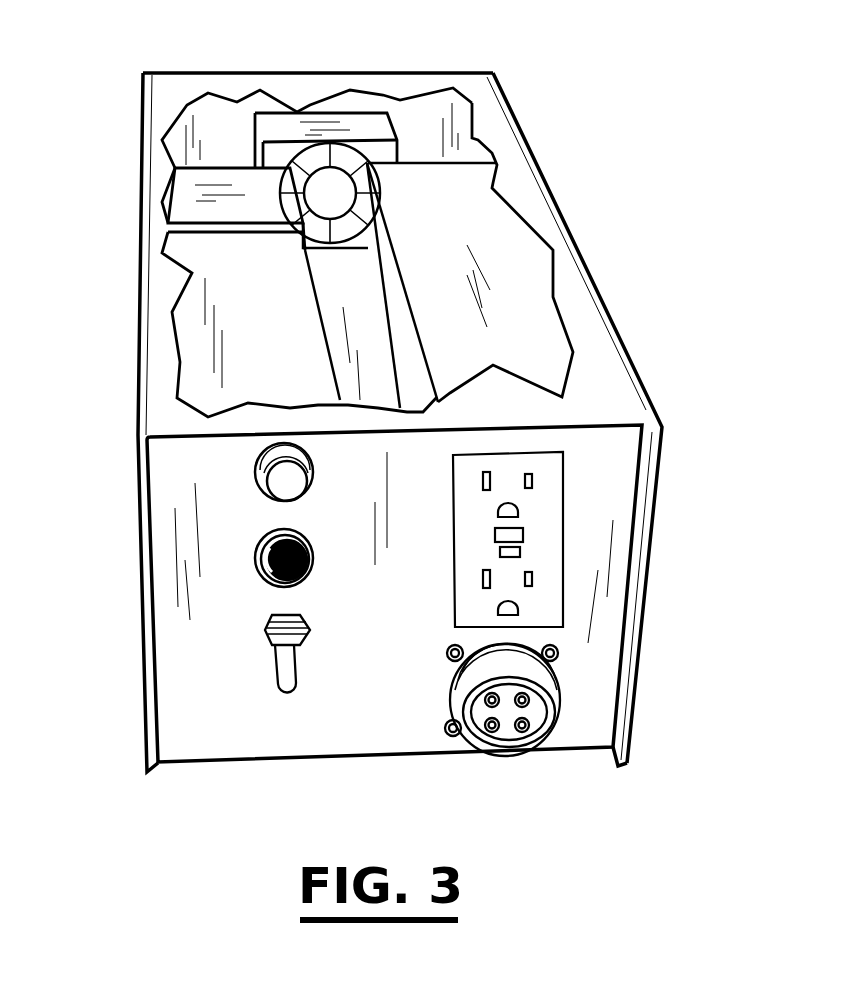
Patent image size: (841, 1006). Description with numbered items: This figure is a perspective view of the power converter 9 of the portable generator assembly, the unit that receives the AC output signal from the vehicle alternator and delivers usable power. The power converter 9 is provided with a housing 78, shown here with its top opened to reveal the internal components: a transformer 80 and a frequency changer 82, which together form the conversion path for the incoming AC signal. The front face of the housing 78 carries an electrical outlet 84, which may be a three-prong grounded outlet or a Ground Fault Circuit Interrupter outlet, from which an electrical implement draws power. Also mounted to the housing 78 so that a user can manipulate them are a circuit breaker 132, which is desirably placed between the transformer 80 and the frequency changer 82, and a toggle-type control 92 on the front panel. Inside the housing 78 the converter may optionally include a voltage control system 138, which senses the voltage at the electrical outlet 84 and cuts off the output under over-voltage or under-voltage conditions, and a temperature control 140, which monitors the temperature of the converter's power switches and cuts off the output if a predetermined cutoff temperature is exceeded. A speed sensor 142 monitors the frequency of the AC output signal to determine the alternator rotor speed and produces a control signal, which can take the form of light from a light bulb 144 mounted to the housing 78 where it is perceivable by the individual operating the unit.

The power converter 9 is at (578, 247).
The housing 78 is at (623, 333).
The transformer 80 is at (193, 347).
The frequency changer 82 is at (480, 183).
The electrical outlet 84 is at (548, 492).
The toggle switch 92 is at (267, 630).
The circuit breaker 132 is at (255, 478).
The voltage control system 138 is at (212, 177).
The temperature control 140 is at (177, 200).
The speed sensor 142 is at (188, 177).
The light bulb 144 is at (255, 540).